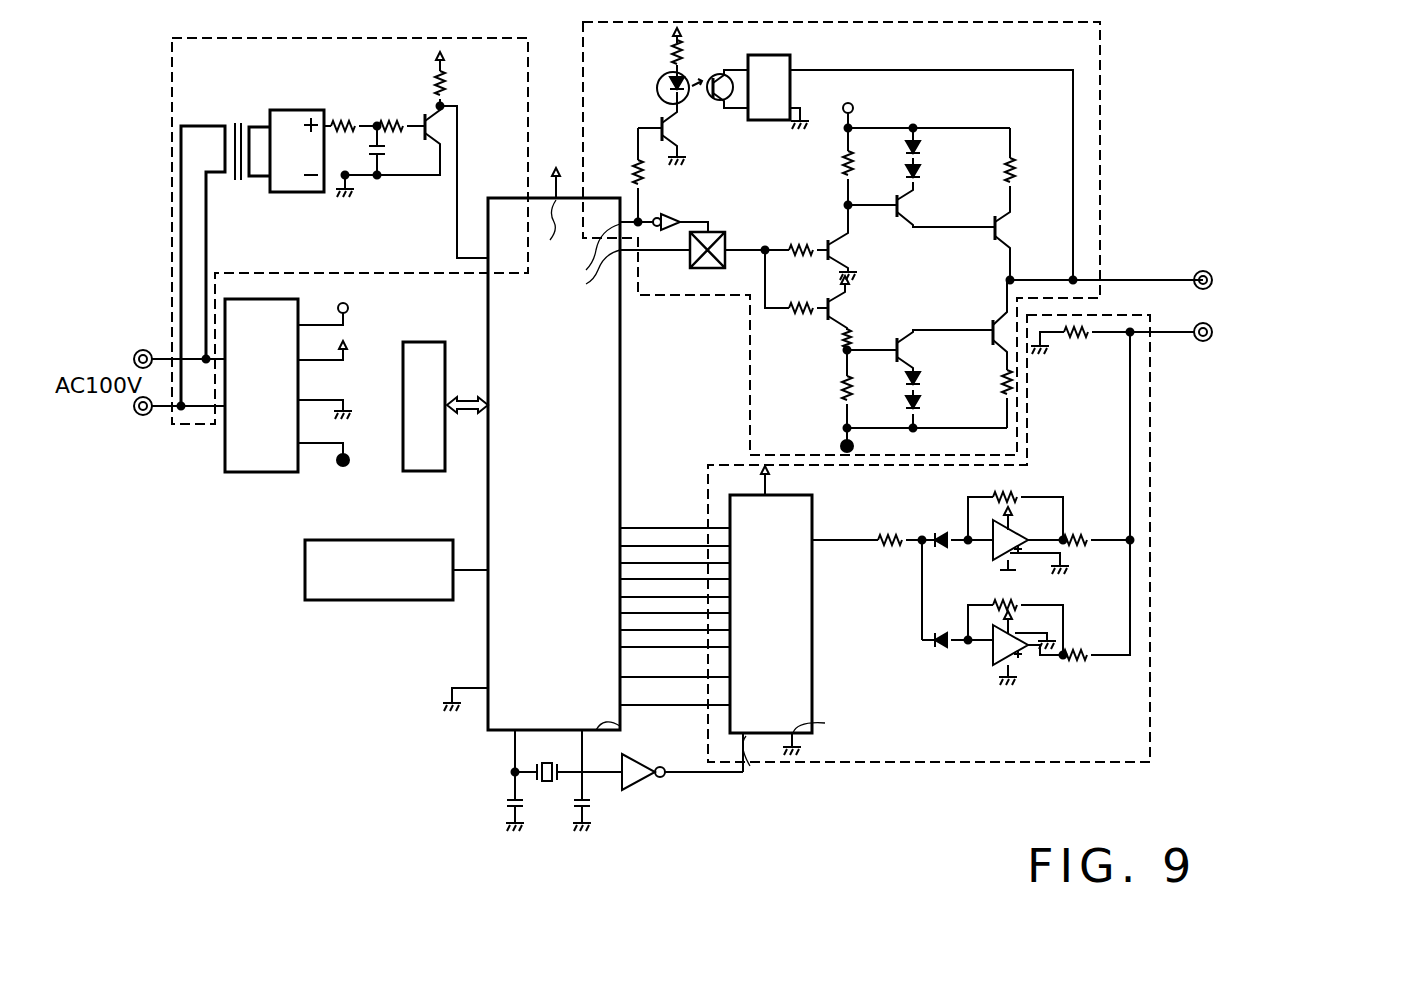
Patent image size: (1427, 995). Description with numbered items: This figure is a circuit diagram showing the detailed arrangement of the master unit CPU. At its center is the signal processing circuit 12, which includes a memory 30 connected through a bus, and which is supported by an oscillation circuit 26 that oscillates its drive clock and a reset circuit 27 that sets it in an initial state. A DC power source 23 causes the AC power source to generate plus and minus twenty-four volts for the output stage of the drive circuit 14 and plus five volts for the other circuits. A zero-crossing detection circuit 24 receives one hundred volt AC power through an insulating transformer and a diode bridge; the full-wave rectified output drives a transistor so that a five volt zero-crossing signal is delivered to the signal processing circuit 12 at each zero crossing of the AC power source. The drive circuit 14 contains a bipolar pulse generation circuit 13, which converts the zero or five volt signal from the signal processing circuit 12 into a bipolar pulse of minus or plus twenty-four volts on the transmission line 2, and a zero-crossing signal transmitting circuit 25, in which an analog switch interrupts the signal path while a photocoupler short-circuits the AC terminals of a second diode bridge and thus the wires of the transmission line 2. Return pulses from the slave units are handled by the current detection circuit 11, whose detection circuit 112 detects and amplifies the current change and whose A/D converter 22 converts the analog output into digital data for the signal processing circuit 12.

The zero-crossing detection circuit 24 is at (172, 146).
The DC power source 23 is at (255, 472).
The memory 30 is at (425, 472).
The reset circuit 27 is at (350, 600).
The signal processing circuit 12 is at (620, 412).
The oscillation circuit 26 is at (565, 827).
The A/D converter 22 is at (812, 615).
The drive circuit 14 is at (893, 238).
The zero-crossing signal transmitting circuit 25 is at (773, 193).
The bipolar pulse generation circuit 13 is at (931, 290).
The current detection circuit 11 is at (961, 538).
The detection circuit 112 is at (957, 591).
The transmission line 2 is at (1209, 312).